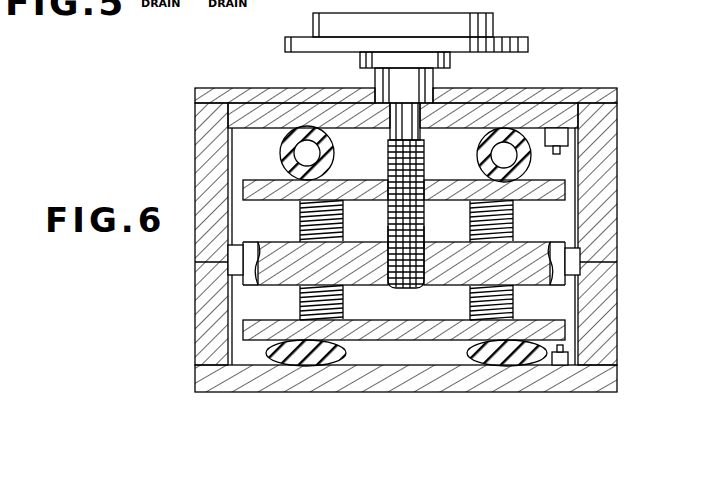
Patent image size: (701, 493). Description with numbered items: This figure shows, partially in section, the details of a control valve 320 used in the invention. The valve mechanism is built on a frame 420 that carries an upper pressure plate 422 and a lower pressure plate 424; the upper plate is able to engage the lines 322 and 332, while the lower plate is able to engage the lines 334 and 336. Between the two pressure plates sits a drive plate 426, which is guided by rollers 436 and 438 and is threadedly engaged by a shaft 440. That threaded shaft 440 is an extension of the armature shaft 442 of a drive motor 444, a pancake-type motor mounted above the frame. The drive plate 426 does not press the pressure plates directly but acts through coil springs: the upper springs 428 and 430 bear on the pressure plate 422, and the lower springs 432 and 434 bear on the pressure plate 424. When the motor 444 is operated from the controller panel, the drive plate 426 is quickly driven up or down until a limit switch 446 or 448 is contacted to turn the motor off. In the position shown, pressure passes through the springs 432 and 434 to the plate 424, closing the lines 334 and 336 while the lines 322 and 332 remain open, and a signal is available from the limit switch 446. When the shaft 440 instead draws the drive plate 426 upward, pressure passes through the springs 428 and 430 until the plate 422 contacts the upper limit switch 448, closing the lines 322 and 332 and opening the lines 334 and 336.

The valve 320 is at (181, 146).
The frame 420 is at (618, 278).
The drive motor 444 is at (494, 30).
The armature shaft 442 is at (397, 136).
The shaft 440 is at (425, 236).
The line 332 is at (282, 153).
The line 322 is at (478, 158).
The line 336 is at (348, 355).
The line 334 is at (478, 357).
The pressure plate 422 is at (545, 195).
The pressure plate 424 is at (562, 330).
The drive plate 426 is at (562, 268).
The roller 436 is at (238, 246).
The roller 438 is at (571, 270).
The coil spring 430 is at (342, 238).
The coil spring 428 is at (515, 225).
The coil spring 432 is at (344, 304).
The coil spring 434 is at (469, 303).
The upper limit switch 448 is at (568, 137).
The limit switch 446 is at (568, 358).